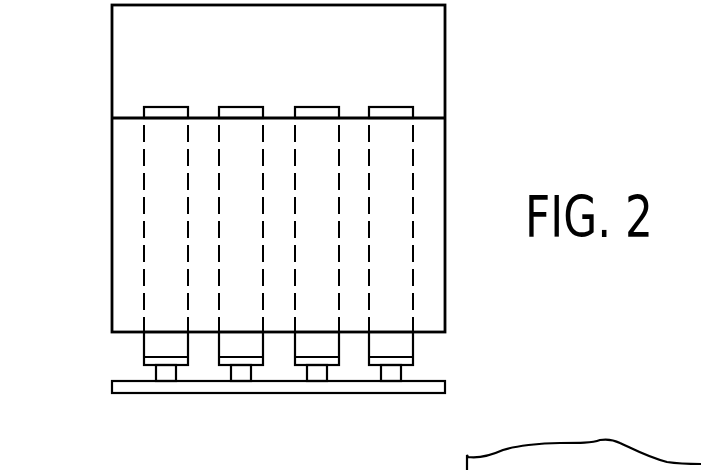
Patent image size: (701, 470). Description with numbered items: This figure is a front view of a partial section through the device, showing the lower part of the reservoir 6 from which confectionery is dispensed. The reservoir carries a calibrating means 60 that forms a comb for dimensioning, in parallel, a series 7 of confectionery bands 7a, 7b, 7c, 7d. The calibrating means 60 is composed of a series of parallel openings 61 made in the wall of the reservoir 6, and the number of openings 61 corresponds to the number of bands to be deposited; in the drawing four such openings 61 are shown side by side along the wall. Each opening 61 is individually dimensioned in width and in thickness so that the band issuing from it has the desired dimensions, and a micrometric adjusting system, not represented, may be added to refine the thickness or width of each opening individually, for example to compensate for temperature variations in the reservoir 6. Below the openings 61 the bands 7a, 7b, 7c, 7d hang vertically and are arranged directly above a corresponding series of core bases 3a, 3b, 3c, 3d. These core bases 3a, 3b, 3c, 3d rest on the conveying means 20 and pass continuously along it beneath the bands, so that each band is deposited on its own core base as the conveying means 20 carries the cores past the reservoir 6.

The housing 6 is at (449, 54).
The calibrating means 60 is at (150, 86).
The parallel openings 61 is at (248, 107).
The series of confectionery bands 7 is at (213, 243).
The confectionery band 7a is at (152, 184).
The confectionery band 7b is at (232, 225).
The confectionery band 7c is at (275, 280).
The confectionery band 7d is at (390, 303).
The conveying means 20 is at (124, 403).
The core base 3a is at (163, 376).
The core base 3b is at (238, 376).
The core base 3c is at (313, 376).
The core base 3d is at (389, 376).